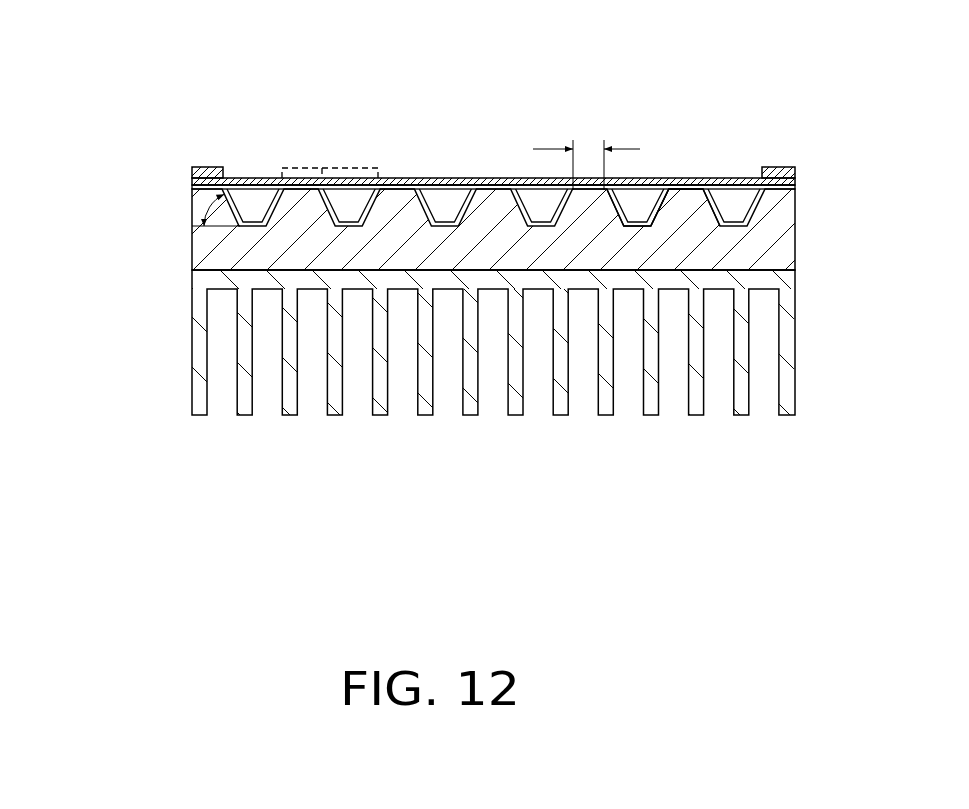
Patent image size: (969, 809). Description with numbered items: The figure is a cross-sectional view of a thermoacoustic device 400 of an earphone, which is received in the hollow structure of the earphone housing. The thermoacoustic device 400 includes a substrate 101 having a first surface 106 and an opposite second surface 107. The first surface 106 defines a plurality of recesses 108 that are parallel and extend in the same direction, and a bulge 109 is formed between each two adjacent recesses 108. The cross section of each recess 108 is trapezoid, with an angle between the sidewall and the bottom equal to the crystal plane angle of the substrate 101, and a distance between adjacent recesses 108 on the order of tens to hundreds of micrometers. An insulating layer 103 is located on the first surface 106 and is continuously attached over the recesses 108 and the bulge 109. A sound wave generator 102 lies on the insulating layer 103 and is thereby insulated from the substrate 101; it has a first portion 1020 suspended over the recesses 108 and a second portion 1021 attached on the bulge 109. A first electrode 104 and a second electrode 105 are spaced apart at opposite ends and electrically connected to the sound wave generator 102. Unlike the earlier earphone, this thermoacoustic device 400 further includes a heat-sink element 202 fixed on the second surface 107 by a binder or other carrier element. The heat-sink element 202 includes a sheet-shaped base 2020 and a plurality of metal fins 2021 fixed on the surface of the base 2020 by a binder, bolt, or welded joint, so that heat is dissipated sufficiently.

The thermoacoustic device 400 is at (553, 62).
The substrate 101 is at (780, 222).
The sound wave generator 102 is at (517, 177).
The insulating layer 103 is at (195, 189).
The first electrode 104 is at (218, 168).
The second electrode 105 is at (780, 167).
The first surface 106 is at (792, 185).
The second surface 107 is at (775, 271).
The recess 108 is at (638, 195).
The bulge 109 is at (690, 200).
The first portion 1020 is at (362, 168).
The second portion 1021 is at (300, 168).
The heat-sink element 202 is at (92, 259).
The base 2020 is at (220, 281).
The fins 2021 is at (197, 387).